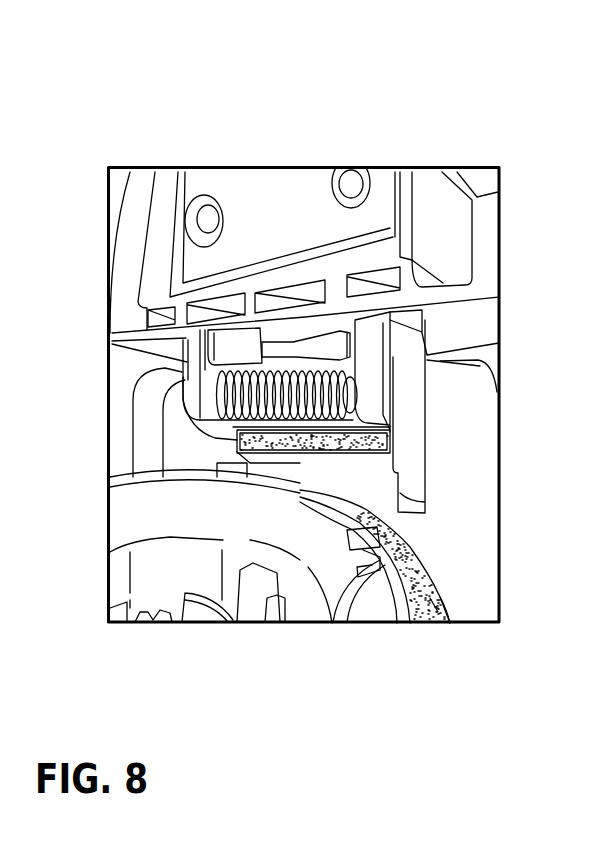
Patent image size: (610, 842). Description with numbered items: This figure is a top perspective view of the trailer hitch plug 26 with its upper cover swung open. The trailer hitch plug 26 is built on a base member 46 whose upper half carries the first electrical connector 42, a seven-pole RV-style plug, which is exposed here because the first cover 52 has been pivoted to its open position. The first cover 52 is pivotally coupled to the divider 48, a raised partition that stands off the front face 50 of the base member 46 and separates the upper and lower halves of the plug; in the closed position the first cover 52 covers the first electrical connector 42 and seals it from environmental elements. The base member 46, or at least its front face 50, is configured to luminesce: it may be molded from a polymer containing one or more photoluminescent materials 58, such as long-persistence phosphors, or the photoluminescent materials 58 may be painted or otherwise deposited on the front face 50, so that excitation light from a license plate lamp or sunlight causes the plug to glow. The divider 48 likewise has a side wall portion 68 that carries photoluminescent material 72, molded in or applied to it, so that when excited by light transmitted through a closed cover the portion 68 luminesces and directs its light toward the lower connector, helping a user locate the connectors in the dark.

The trailer hitch plug 26 is at (394, 118).
The first electrical connector 42 is at (445, 555).
The base member 46 is at (450, 592).
The divider 48 is at (490, 367).
The front face 50 is at (430, 607).
The first cover 52 is at (487, 207).
The photoluminescent materials 58 is at (410, 552).
The portion of the divider 68 is at (393, 433).
The photoluminescent material 72 is at (365, 437).